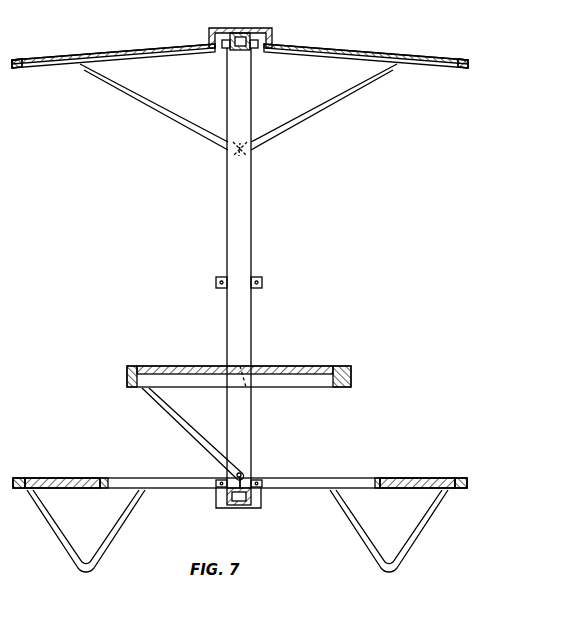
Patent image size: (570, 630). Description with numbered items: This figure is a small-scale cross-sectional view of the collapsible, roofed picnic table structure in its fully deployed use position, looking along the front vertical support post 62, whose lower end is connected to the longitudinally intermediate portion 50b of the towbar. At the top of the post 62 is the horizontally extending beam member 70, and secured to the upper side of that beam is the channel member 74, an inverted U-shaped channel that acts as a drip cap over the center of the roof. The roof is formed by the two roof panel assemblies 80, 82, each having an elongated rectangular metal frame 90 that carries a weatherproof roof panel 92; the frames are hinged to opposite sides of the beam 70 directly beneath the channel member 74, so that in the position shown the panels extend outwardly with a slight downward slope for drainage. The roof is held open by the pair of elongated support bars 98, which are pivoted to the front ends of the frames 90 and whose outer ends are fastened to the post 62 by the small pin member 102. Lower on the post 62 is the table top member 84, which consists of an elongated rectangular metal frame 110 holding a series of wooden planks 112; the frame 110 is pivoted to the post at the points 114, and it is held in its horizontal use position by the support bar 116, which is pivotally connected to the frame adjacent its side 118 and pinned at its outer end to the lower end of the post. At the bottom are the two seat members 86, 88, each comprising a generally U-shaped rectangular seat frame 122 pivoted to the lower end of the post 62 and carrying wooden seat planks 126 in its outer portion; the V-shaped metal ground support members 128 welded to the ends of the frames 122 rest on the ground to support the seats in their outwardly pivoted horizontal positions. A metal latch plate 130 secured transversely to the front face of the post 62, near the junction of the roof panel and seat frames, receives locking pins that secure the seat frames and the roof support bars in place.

The longitudinally intermediate portion 50b is at (256, 500).
The post 62 is at (250, 198).
The beam member 70 is at (240, 56).
The channel member 74 is at (232, 28).
The roof panel assembly 80 is at (462, 70).
The roof panel assembly 82 is at (16, 72).
The table top member 84 is at (231, 365).
The seat member 86 is at (296, 474).
The seat member 88 is at (138, 474).
The metal frame 90 is at (16, 58).
The roof panel 92 is at (152, 48).
The support bar 98 is at (144, 108).
The pin member 102 is at (236, 150).
The metal frame 110 is at (351, 380).
The wooden planks 112 is at (172, 366).
The pivot points 114 is at (246, 388).
The support bar 116 is at (172, 422).
The side 118 is at (127, 382).
The seat frame 122 is at (16, 476).
The wooden seat planks 126 is at (66, 488).
The ground support member 128 is at (60, 557).
The latch plate 130 is at (262, 284).